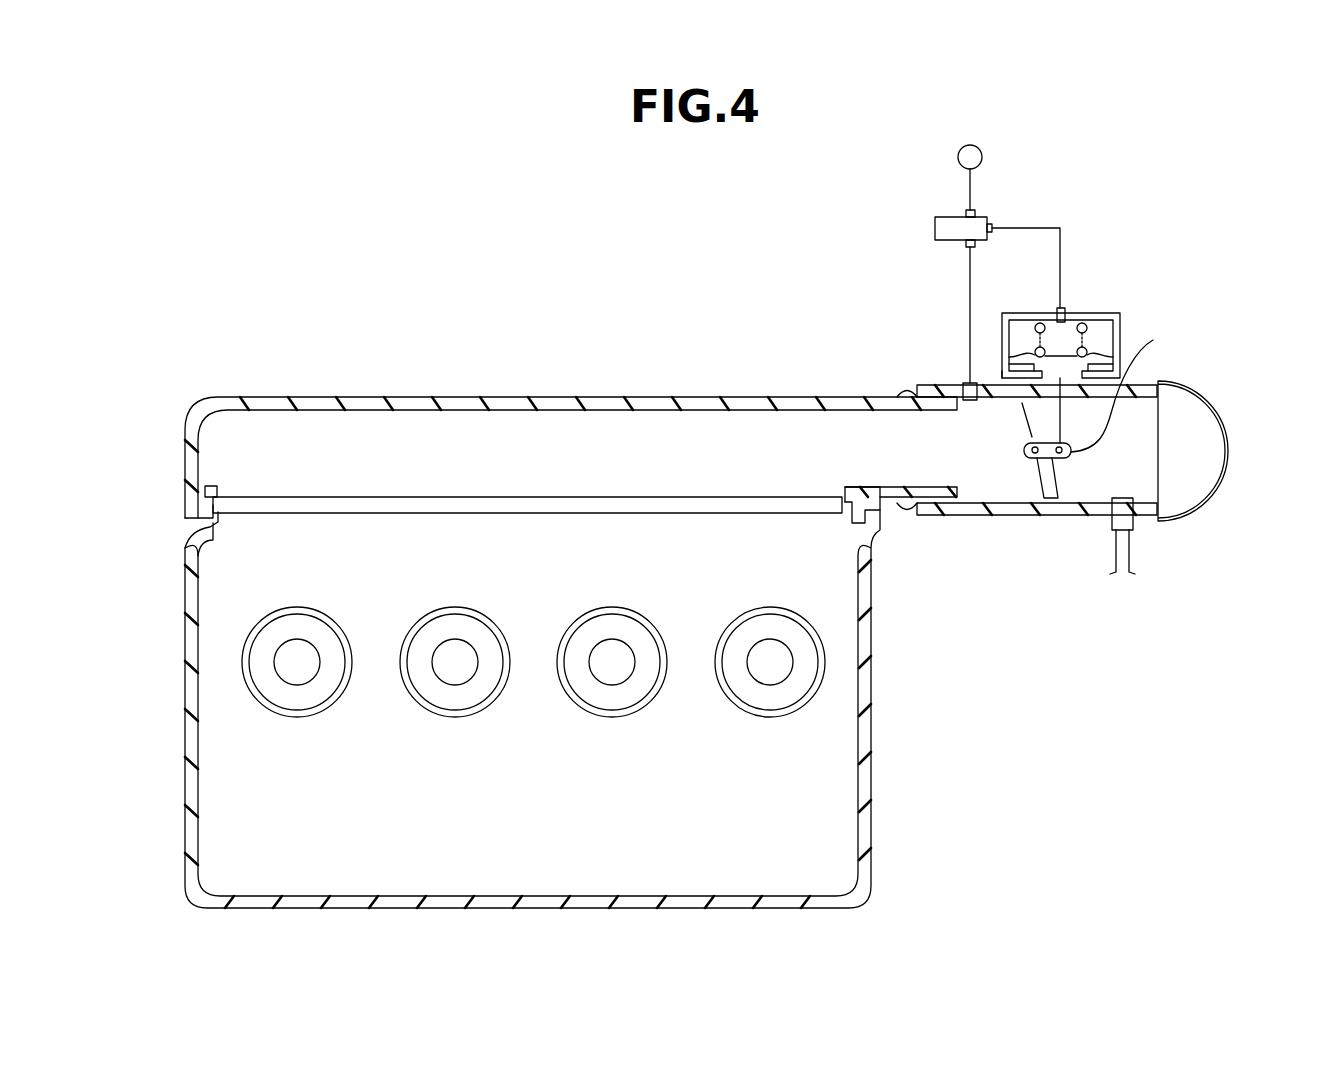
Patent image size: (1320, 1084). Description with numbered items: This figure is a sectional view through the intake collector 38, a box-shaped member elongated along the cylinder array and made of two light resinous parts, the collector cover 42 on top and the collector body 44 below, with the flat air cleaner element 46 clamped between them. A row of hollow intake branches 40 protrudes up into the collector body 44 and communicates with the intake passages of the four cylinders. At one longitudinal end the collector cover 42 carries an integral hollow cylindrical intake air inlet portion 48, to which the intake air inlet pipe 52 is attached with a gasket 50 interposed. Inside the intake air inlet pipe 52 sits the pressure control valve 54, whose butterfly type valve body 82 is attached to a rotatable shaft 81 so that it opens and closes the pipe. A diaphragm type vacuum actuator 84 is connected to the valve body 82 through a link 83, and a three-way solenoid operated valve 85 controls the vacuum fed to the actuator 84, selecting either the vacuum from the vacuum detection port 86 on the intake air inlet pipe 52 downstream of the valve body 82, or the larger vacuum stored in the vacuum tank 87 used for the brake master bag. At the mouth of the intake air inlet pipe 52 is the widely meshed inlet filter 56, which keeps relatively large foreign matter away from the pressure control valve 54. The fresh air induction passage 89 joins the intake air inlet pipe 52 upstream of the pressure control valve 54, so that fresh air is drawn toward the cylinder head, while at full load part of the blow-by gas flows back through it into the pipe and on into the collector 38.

The collector 38 is at (230, 914).
The intake branches 40 is at (430, 714).
The collector cover 42 is at (556, 397).
The collector body 44 is at (186, 760).
The air cleaner element 46 is at (356, 505).
The intake air inlet portion 48 is at (871, 432).
The gasket 50 is at (938, 502).
The intake air inlet pipe 52 is at (974, 515).
The pressure control valve 54 is at (1016, 475).
The inlet filter 56 is at (1207, 483).
The rotatable shaft 81 is at (1061, 460).
The valve body 82 is at (1038, 485).
The link 83 is at (1132, 388).
The vacuum actuator 84 is at (1120, 320).
The three-way solenoid operated valve 85 is at (935, 228).
The vacuum detection port 86 is at (966, 384).
The vacuum tank 87 is at (983, 157).
The fresh air induction passage 89 is at (1123, 550).